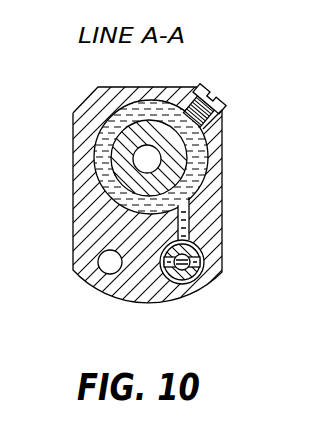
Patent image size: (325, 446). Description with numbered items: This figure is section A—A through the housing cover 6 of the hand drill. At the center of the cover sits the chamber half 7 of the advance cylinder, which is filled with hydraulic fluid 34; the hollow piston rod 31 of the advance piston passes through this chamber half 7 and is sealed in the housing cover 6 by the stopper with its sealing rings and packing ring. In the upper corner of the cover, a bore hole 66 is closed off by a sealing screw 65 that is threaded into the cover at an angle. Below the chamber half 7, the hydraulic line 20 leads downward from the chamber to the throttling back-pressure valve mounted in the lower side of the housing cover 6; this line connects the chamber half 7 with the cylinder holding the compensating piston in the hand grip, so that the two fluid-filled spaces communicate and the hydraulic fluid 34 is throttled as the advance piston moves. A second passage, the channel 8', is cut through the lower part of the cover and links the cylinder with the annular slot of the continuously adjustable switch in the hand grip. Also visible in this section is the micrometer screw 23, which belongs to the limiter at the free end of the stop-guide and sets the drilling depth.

The housing cover 6 is at (213, 170).
The chamber half 7 is at (105, 132).
The hydraulic fluid 34 is at (152, 157).
The piston rod 31 is at (115, 186).
The sealing screw 65 is at (227, 102).
The bore hole 66 is at (219, 113).
The hydraulic line 20 is at (195, 222).
The micrometer screw 23 is at (203, 267).
The channel 8' is at (109, 292).